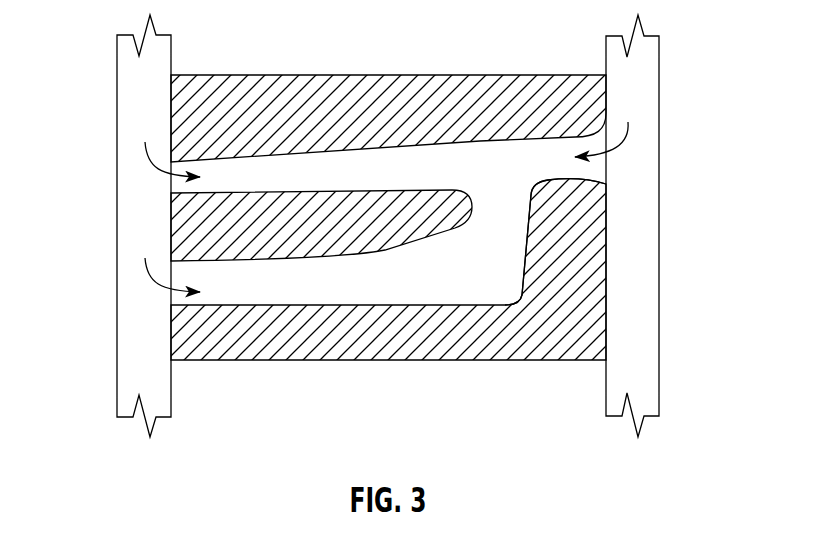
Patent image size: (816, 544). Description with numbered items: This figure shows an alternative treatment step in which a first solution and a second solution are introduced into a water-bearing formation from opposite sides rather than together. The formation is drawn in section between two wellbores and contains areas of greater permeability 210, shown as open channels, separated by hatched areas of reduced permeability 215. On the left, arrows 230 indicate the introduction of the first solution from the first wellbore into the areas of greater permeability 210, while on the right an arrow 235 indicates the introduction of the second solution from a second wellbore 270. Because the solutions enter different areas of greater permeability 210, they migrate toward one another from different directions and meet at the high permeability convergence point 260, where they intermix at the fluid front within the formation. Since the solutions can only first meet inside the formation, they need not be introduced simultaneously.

The areas of greater permeability 210 is at (483, 170).
The areas of reduced permeability 215 is at (265, 130).
The introduction of the first solution 230 is at (155, 163).
The introduction of the second solution 235 is at (620, 147).
The high permeability convergence point 260 is at (505, 193).
The second wellbore 270 is at (613, 360).